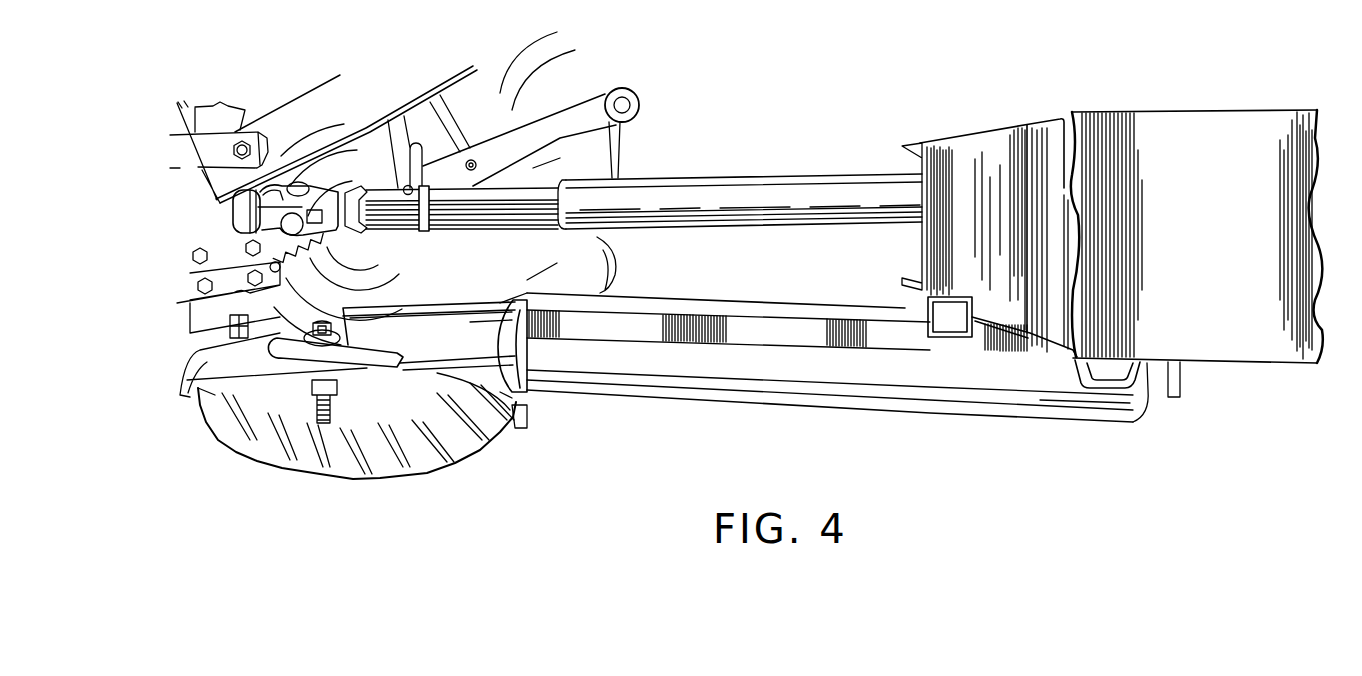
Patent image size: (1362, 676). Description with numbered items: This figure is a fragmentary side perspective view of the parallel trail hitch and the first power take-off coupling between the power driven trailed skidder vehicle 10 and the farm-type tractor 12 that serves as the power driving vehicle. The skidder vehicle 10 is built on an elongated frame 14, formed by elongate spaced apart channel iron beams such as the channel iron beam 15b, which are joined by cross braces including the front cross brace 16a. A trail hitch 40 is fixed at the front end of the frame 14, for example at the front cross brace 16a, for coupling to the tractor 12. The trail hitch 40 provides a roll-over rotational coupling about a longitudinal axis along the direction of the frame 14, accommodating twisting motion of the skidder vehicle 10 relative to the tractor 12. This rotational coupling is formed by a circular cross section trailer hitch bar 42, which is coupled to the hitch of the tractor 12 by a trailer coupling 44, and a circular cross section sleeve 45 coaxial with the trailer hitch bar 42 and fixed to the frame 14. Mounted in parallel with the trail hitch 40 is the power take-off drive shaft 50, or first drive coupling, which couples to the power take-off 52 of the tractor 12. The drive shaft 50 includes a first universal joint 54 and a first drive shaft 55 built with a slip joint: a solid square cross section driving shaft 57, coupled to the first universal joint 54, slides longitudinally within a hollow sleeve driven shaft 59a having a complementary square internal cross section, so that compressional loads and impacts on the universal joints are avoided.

The power driven trailed skidder vehicle 10 is at (958, 119).
The farm-type tractor 12 is at (268, 88).
The elongated frame 14 is at (1272, 371).
The elongate channel iron beam 15b is at (1233, 270).
The front cross brace 16a is at (1000, 233).
The trail hitch 40 is at (687, 409).
The trailer hitch bar 42 is at (458, 344).
The trailer coupling 44 is at (300, 320).
The sleeve 45 is at (797, 407).
The power take-off drive shaft 50 is at (785, 161).
The power take-off 52 is at (243, 205).
The first universal joint 54 is at (316, 192).
The first drive shaft 55 is at (723, 173).
The driving shaft 57 is at (530, 230).
The driven shaft 59a is at (757, 230).